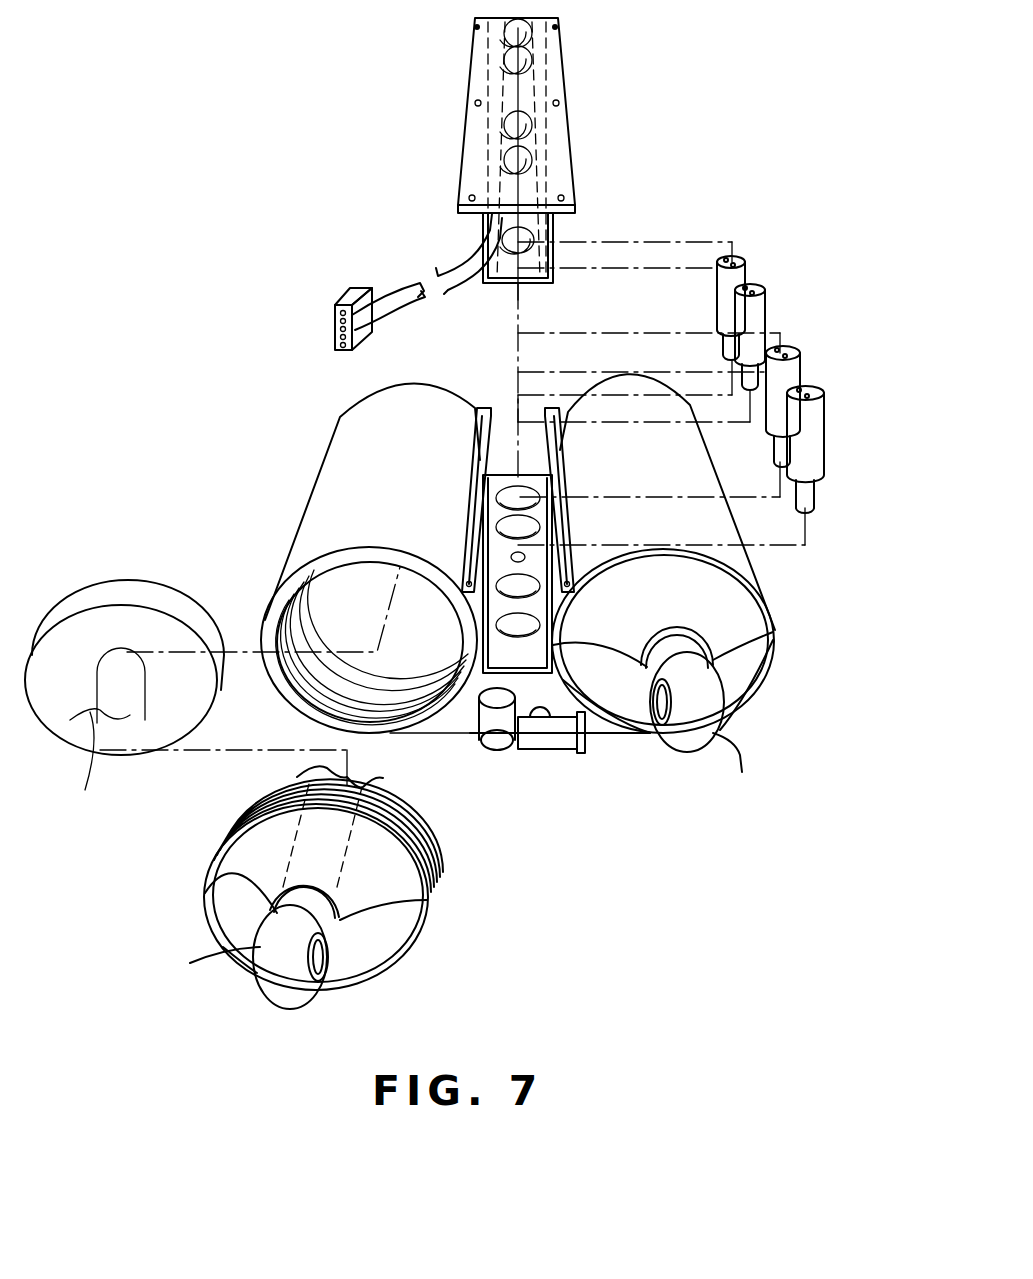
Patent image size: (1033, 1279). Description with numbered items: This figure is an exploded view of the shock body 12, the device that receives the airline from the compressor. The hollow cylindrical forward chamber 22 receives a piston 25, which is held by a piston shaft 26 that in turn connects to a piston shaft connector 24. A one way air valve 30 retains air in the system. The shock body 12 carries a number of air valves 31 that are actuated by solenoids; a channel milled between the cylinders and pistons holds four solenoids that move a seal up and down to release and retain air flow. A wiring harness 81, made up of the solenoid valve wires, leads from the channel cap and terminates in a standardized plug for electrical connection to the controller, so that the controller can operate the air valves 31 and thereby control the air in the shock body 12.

The shock body 12 is at (310, 438).
The hollow cylindrical forward chamber 22 is at (403, 637).
The piston shaft connector 24 is at (710, 733).
The piston 25 is at (124, 642).
The piston shaft 26 is at (97, 712).
The one way air valve 30 is at (505, 750).
The air valve 31 is at (510, 486).
The wiring harness 81 is at (397, 280).